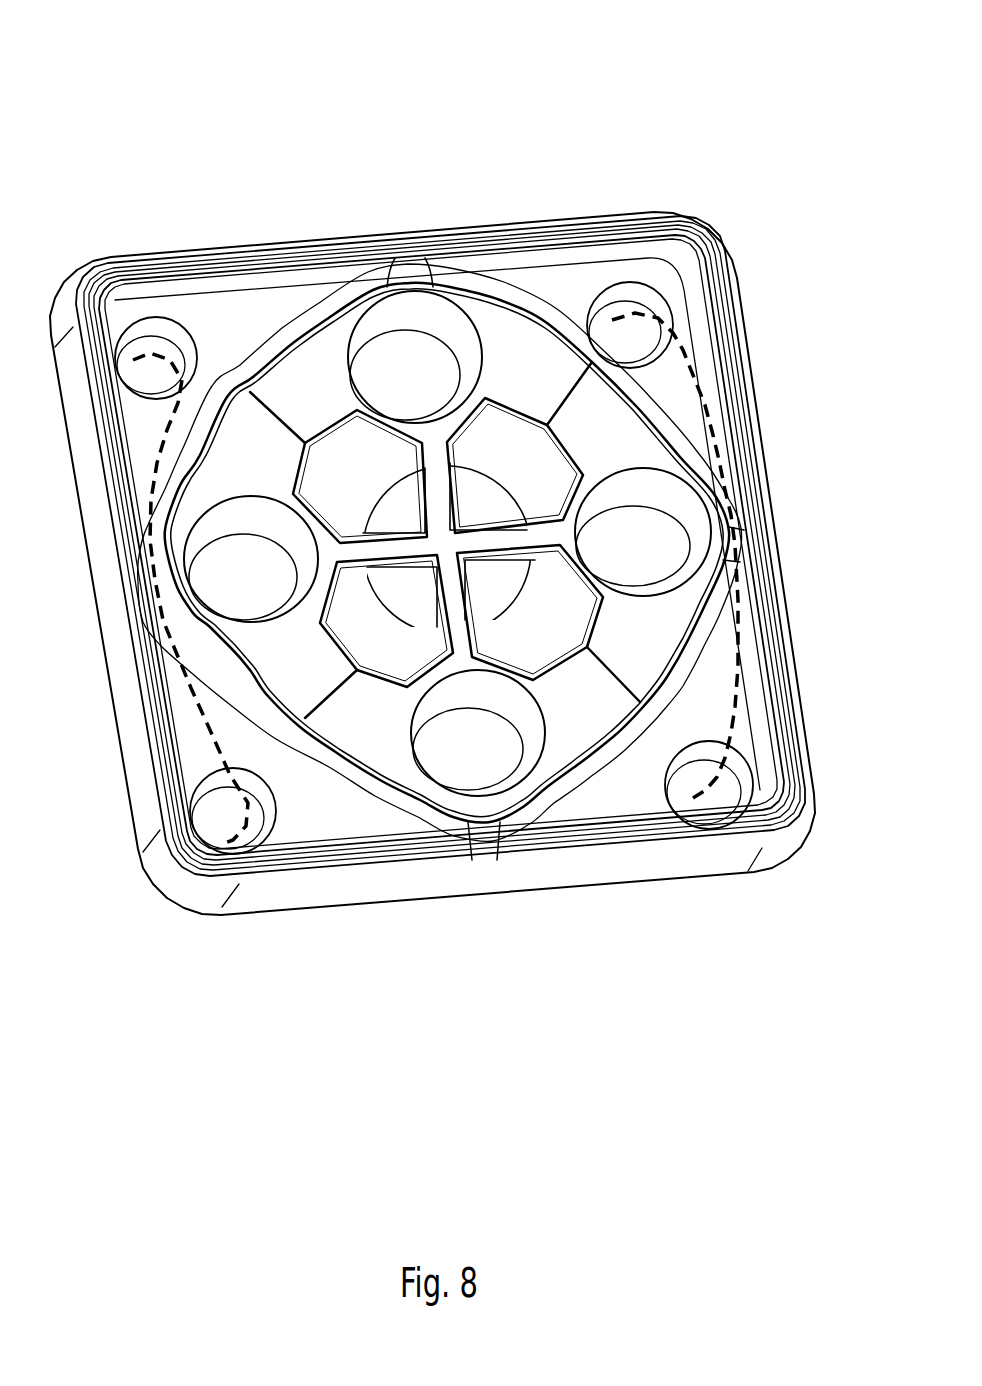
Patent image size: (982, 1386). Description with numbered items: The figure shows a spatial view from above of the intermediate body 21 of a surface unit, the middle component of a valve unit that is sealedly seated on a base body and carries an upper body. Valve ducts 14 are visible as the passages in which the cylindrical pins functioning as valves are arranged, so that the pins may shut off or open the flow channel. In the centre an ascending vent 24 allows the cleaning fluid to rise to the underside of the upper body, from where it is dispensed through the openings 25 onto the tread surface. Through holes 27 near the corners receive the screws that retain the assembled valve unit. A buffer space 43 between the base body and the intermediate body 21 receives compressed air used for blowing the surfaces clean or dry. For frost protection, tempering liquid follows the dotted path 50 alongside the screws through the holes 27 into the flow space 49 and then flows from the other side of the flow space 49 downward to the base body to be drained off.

The valve duct 14 is at (402, 382).
The ascending vent 24 is at (483, 507).
The through hole 27 is at (613, 323).
The intermediate body 21 is at (163, 870).
The flow space 49 is at (312, 815).
The opening 25 is at (548, 627).
The buffer space 43 is at (583, 710).
The path 50 is at (717, 787).